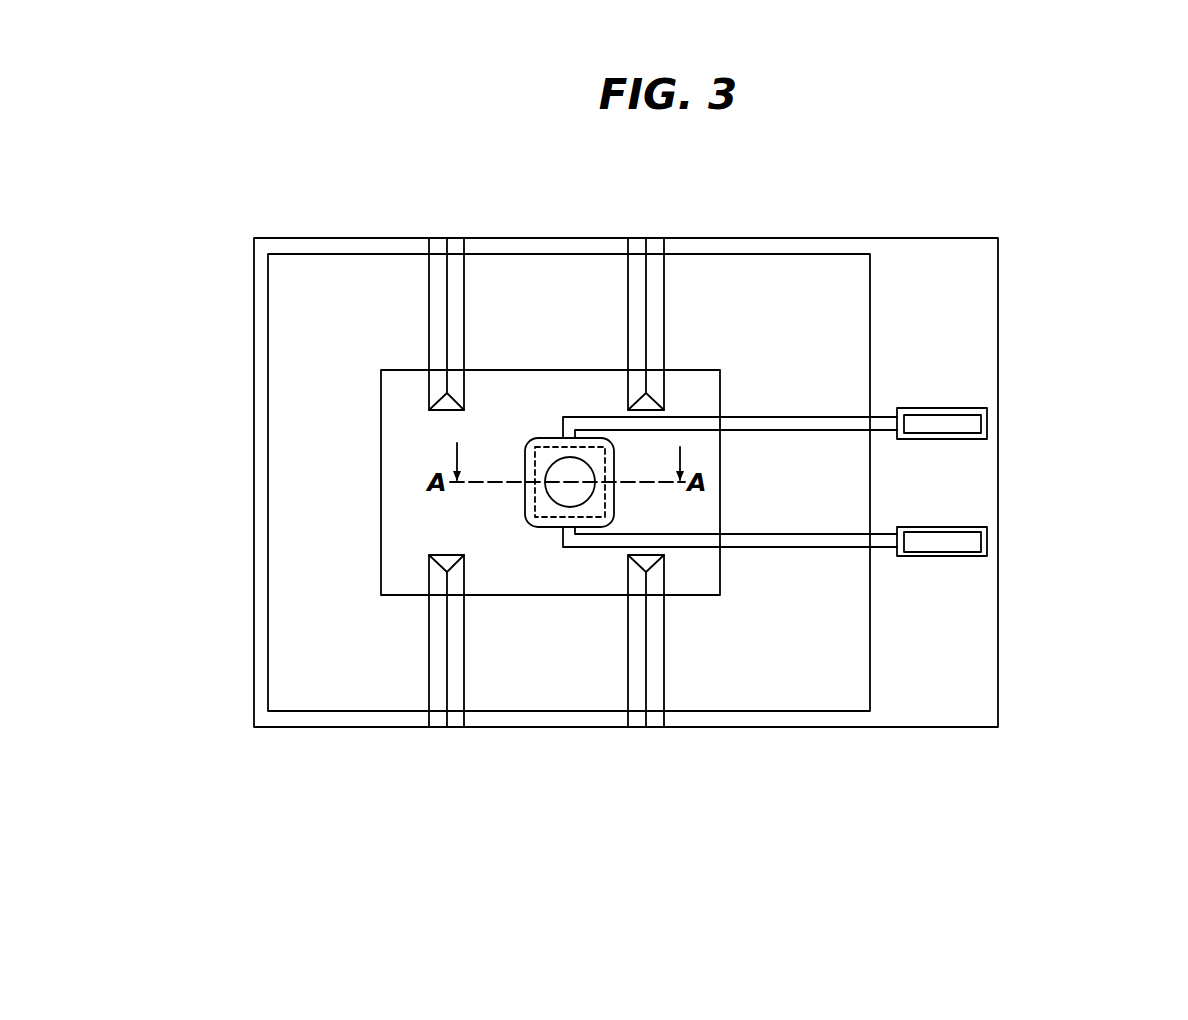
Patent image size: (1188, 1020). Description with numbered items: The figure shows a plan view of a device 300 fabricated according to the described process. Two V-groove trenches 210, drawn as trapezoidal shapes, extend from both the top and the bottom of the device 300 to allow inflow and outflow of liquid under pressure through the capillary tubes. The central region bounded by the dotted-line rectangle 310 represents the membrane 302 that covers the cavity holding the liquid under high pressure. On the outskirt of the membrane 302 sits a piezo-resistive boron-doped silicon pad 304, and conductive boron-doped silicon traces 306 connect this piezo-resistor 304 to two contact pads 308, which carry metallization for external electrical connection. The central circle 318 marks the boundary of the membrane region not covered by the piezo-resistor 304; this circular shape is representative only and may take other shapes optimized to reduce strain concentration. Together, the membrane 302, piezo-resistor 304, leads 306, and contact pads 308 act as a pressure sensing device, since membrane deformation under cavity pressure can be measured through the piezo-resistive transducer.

The device 300 is at (1037, 318).
The trenches 210 is at (472, 290).
The membrane 302 is at (567, 488).
The piezo-resistive pad 304 is at (545, 441).
The conductive traces 306 is at (812, 415).
The contact pads 308 is at (950, 425).
The dotted-line rectangle 310 is at (533, 500).
The central circle boundary 318 is at (592, 492).